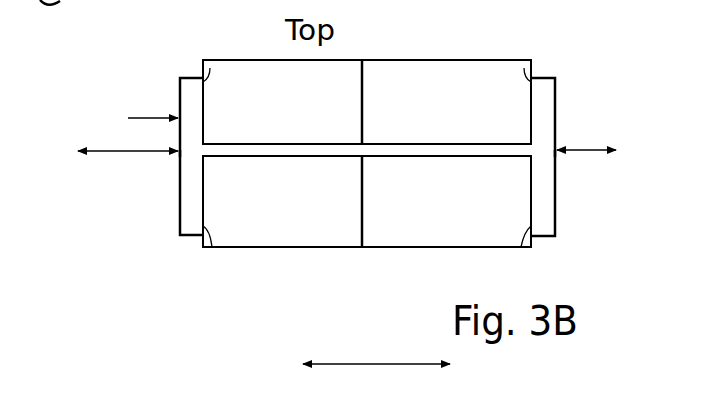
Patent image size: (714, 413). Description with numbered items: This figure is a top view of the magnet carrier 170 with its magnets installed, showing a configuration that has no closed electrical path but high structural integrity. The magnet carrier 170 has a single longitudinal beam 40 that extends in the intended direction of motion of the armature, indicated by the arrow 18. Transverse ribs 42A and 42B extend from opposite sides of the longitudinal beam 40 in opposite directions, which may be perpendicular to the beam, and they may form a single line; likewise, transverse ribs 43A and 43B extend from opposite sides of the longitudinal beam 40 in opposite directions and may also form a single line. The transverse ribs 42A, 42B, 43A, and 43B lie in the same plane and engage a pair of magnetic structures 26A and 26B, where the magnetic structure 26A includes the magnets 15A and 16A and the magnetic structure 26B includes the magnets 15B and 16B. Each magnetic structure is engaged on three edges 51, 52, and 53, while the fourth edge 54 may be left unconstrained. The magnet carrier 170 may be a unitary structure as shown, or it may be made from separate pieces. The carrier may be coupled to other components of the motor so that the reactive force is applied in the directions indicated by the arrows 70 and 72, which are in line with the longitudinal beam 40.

The magnet 15A is at (263, 212).
The magnet 15B is at (252, 102).
The magnet 16A is at (468, 197).
The magnet 16B is at (461, 102).
The arrow 18 is at (355, 362).
The magnet 26A is at (285, 254).
The magnet 26B is at (408, 58).
The longitudinal beam 40 is at (325, 157).
The transverse rib 42A is at (180, 213).
The transverse rib 42B is at (180, 85).
The transverse rib 43A is at (557, 197).
The transverse rib 43B is at (557, 112).
The edge 51 is at (207, 82).
The edge 52 is at (388, 144).
The edge 53 is at (527, 80).
The fourth edge 54 is at (383, 60).
The arrow 70 is at (105, 151).
The arrow 72 is at (592, 152).
The magnet carrier 170 is at (135, 119).